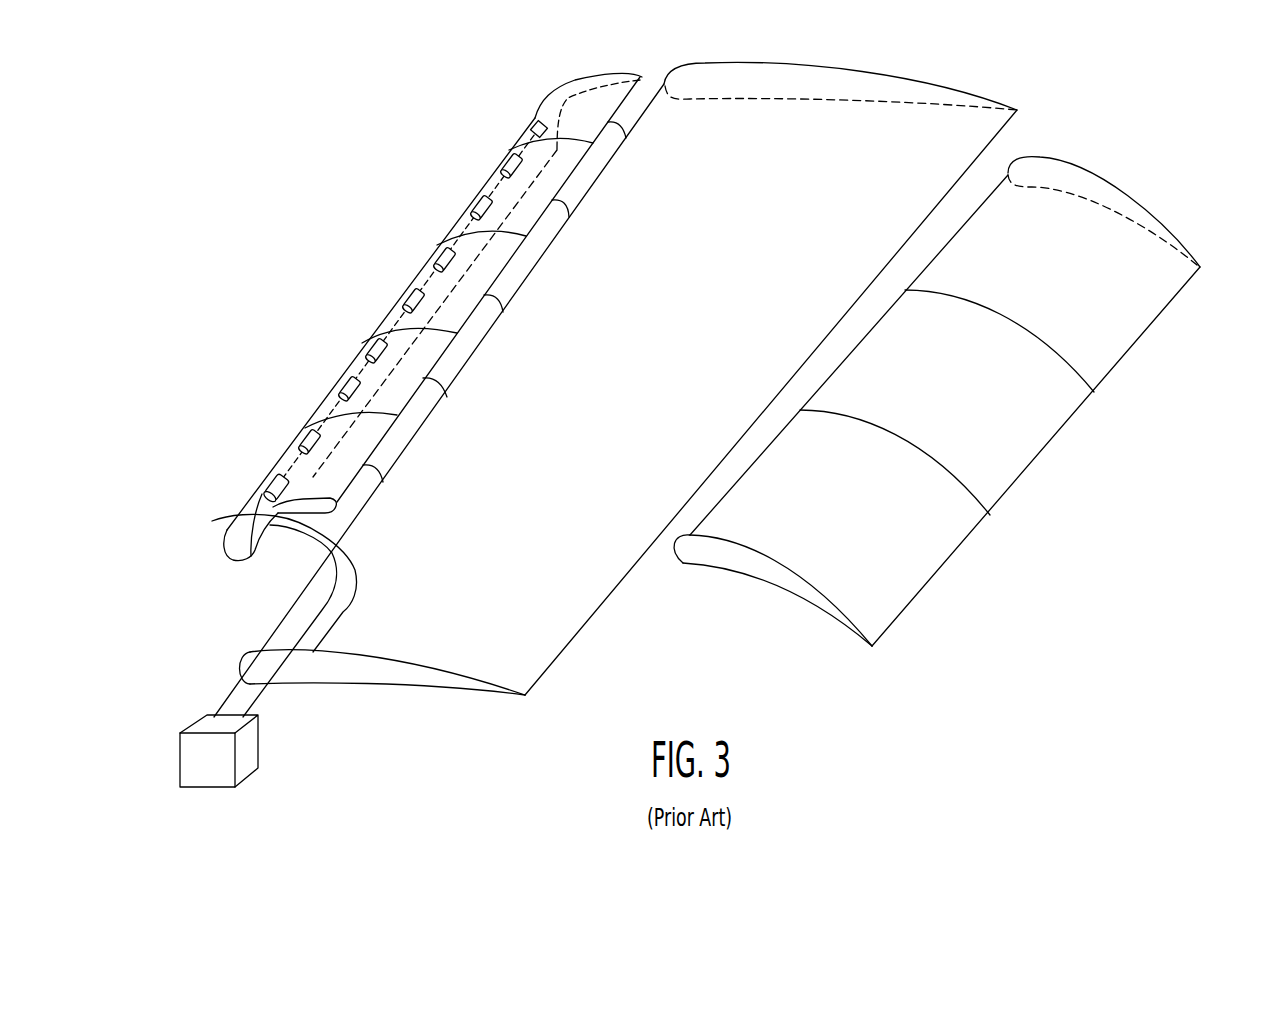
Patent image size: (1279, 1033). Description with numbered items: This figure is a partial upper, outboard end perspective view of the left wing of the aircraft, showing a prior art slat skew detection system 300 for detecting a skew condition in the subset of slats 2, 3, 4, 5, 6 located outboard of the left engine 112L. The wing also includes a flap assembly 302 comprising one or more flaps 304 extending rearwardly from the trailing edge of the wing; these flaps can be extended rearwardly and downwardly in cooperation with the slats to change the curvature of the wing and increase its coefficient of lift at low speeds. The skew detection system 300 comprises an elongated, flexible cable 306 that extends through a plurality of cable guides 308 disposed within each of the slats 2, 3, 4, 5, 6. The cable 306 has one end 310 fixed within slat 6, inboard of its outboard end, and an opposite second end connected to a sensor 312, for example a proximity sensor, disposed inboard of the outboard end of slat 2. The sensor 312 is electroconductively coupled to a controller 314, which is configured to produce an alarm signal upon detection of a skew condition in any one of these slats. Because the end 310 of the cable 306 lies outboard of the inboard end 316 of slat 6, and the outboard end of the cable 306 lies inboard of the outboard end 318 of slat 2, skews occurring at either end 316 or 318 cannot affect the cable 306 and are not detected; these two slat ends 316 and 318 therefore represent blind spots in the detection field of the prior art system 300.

The slat skew detection system 300 is at (342, 128).
The flap assembly 302 is at (753, 562).
The flaps 304 is at (930, 522).
The flexible cable 306 is at (432, 277).
The cable guides 308 is at (371, 350).
The cable end 310 is at (530, 128).
The sensor 312 is at (268, 476).
The controller 314 is at (208, 770).
The inboard end of slat 6 316 is at (576, 82).
The outboard end of slat 2 318 is at (233, 547).
The left engine 112L is at (395, 670).
The slat 2 is at (366, 470).
The slat 3 is at (447, 396).
The slat 4 is at (504, 311).
The slat 5 is at (571, 216).
The slat 6 is at (628, 133).